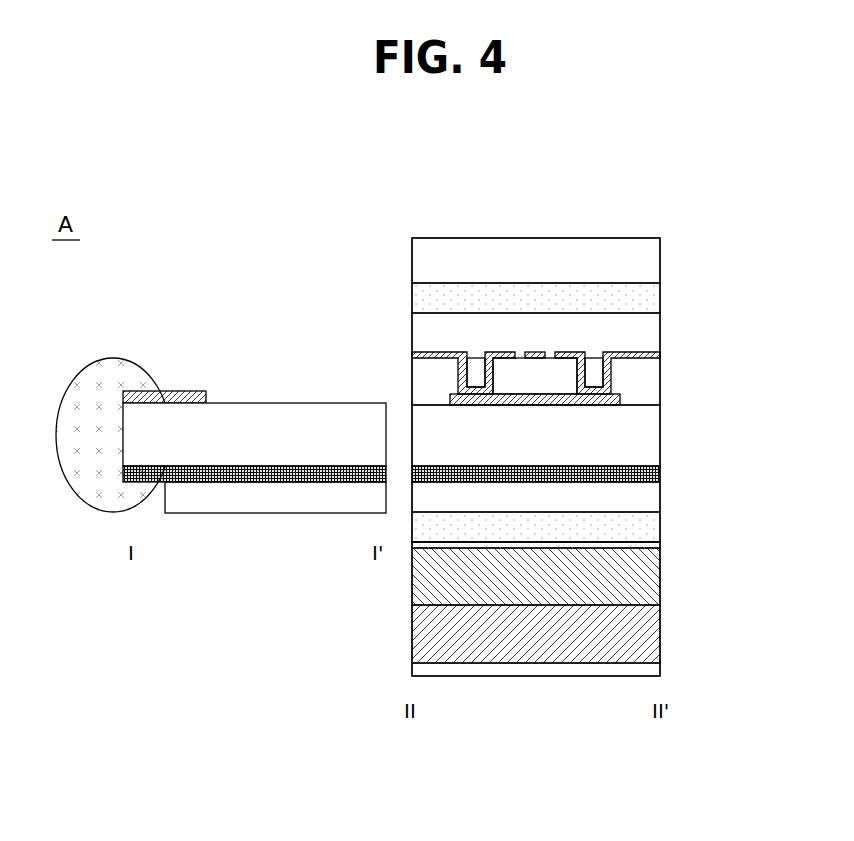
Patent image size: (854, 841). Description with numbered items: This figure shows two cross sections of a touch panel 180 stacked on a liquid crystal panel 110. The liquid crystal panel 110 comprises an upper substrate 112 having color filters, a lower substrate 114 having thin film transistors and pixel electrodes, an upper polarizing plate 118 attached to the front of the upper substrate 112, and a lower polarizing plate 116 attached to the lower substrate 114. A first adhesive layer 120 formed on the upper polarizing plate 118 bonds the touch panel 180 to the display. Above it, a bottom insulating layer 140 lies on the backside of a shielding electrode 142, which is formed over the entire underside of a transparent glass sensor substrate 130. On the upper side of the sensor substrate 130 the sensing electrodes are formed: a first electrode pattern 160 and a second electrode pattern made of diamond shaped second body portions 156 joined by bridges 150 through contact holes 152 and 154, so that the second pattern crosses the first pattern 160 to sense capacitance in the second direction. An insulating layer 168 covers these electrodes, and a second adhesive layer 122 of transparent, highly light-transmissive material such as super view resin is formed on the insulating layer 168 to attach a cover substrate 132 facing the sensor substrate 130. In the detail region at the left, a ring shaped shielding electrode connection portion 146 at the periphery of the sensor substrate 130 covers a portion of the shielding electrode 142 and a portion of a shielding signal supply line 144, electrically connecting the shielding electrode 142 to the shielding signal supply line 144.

The liquid crystal panel 110 is at (768, 552).
The upper substrate 112 is at (655, 593).
The lower substrate 114 is at (655, 637).
The lower polarizing plate 116 is at (655, 668).
The upper polarizing plate 118 is at (655, 547).
The first adhesive layer 120 is at (655, 530).
The second adhesive layer 122 is at (655, 292).
The sensor substrate 130 is at (655, 440).
The cover substrate 132 is at (655, 255).
The bottom insulating layer 140 is at (655, 500).
The shielding electrode 142 is at (655, 473).
The shielding signal supply line 144 is at (207, 392).
The shielding electrode connection portion 146 is at (119, 362).
The bridge 150 is at (620, 400).
The contact hole 152 is at (591, 355).
The contact hole 154 is at (476, 355).
The second body portion 156 is at (655, 355).
The first electrode pattern 160 is at (536, 352).
The insulating layer 168 is at (655, 325).
The touch panel 180 is at (768, 540).